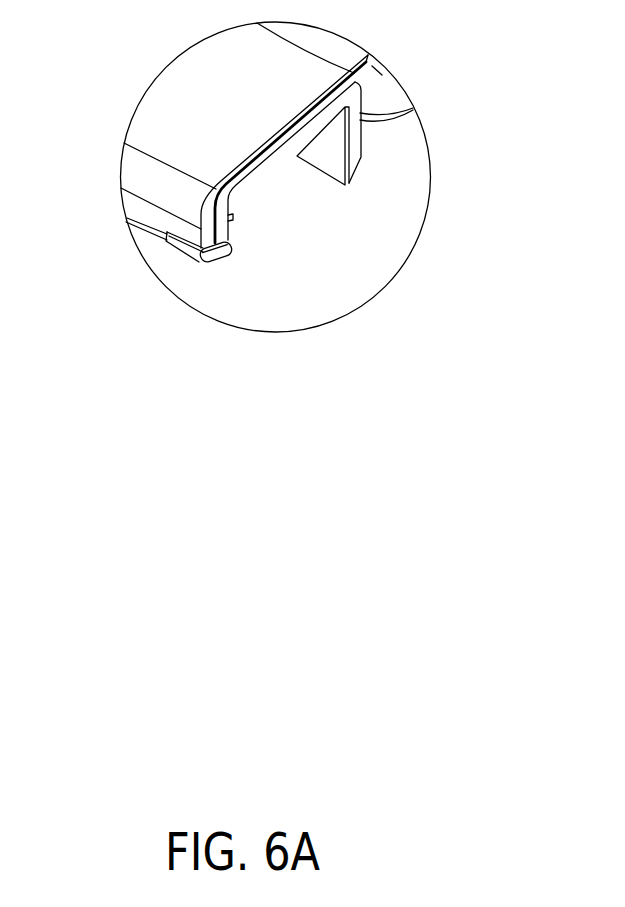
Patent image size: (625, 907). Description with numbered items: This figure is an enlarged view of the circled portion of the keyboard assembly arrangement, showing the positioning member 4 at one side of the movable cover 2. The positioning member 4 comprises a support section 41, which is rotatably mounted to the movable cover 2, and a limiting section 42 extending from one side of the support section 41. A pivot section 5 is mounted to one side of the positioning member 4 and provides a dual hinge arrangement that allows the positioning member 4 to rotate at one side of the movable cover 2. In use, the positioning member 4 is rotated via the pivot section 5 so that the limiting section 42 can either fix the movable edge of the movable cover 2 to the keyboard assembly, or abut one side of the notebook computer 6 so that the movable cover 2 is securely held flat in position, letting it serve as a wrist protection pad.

The movable cover 2 is at (272, 140).
The positioning member 4 is at (335, 266).
The support section 41 is at (276, 173).
The limiting section 42 is at (362, 160).
The pivot section 5 is at (217, 269).
The notebook computer 6 is at (385, 122).